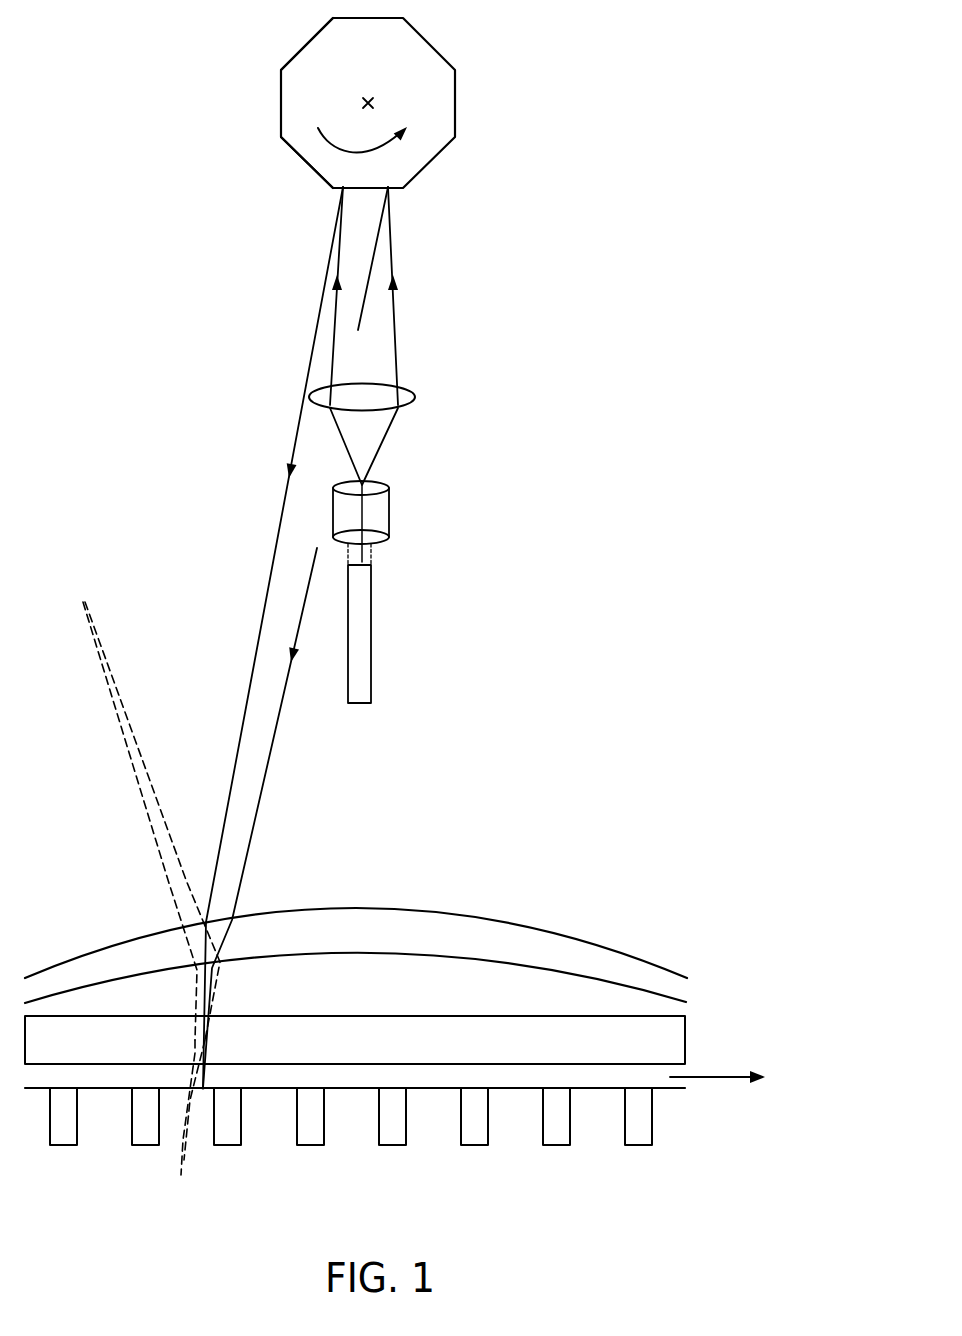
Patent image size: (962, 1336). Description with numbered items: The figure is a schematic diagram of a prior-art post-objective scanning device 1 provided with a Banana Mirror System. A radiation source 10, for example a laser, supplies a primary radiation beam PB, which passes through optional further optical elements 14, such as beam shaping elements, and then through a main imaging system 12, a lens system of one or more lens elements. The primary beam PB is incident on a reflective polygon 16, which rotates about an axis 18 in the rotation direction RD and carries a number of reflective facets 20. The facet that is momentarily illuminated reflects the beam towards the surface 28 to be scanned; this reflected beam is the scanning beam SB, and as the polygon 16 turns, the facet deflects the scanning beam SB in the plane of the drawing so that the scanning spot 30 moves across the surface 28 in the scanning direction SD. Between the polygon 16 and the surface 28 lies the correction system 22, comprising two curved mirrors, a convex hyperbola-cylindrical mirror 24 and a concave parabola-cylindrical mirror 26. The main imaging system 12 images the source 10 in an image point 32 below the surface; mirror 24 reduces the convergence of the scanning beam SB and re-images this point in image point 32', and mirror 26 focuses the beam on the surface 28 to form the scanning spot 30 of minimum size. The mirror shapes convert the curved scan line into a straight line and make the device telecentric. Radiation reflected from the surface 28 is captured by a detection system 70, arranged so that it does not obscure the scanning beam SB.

The post-objective scanning device 1 is at (646, 250).
The radiation source 10 is at (358, 653).
The main imaging system 12 is at (418, 398).
The further optical elements 14 is at (372, 510).
The reflective polygon 16 is at (452, 44).
The axis 18 is at (377, 100).
The reflective facets 20 is at (295, 52).
The correction system 22 is at (409, 942).
The convex mirror 24 is at (658, 994).
The concave mirror 26 is at (600, 942).
The surface to be scanned 28 is at (673, 1090).
The scanning spot 30 is at (203, 1088).
The image point 32 is at (187, 1126).
The image point 32' is at (143, 805).
The detection system 70 is at (650, 1042).
The rotation direction RD is at (393, 145).
The primary radiation beam PB is at (378, 357).
The scanning beam SB is at (258, 693).
The scanning direction SD is at (737, 1072).